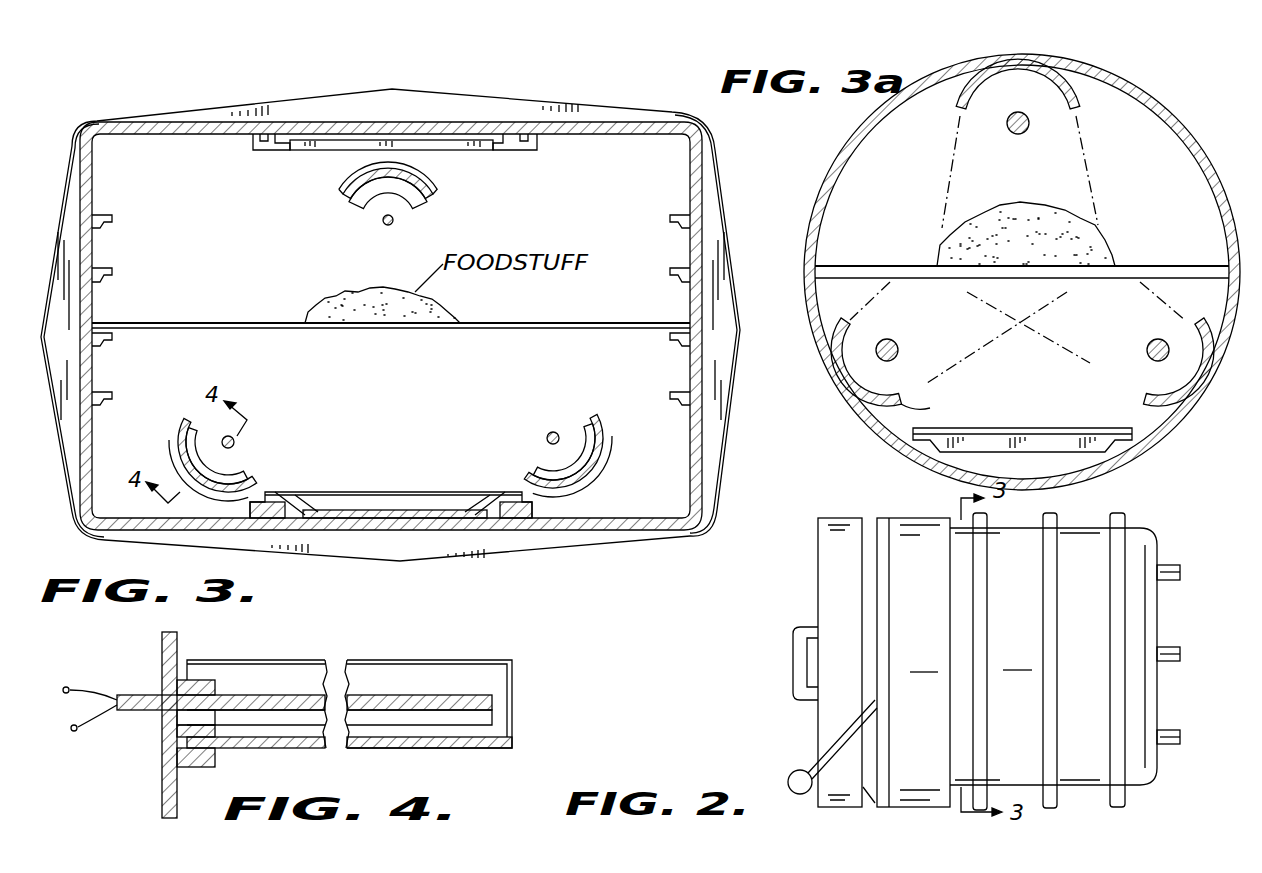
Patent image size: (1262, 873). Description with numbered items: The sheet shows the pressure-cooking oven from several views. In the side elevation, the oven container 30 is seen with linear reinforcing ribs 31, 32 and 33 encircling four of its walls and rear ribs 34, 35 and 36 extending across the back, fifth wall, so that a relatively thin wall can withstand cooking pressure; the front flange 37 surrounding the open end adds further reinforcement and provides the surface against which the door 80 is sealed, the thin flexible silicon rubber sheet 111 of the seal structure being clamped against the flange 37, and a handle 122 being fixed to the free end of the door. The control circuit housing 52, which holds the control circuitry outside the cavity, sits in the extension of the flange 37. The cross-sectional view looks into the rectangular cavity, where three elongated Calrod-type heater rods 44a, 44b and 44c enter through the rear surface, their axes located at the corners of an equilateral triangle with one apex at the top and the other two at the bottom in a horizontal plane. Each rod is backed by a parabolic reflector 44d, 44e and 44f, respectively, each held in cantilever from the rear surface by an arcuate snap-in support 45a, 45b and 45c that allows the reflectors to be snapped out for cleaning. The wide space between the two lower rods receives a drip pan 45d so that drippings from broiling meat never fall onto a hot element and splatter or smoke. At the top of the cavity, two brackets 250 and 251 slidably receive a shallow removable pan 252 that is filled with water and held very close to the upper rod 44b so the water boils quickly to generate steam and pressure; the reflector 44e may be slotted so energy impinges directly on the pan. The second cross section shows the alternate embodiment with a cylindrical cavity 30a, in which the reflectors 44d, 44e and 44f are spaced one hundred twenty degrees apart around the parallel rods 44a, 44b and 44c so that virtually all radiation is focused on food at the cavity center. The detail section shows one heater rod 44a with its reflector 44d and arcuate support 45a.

In FIG. 3, the oven container 30 is at (583, 552).
In FIG. 2, the oven container 30 is at (1053, 656).
In FIG. 3A, the cylindrical cavity 30a is at (1183, 128).
In FIG. 3, the reinforcing rib 31 is at (482, 98).
In FIG. 2, the reinforcing rib 31 is at (988, 520).
In FIG. 2, the reinforcing rib 32 is at (1051, 513).
In FIG. 2, the reinforcing rib 33 is at (1119, 513).
In FIG. 2, the rear rib 34 is at (1186, 571).
In FIG. 2, the rear rib 35 is at (1186, 653).
In FIG. 2, the rear rib 36 is at (1186, 736).
In FIG. 2, the front flange 37 is at (884, 520).
In FIG. 2, the control circuit housing 52 is at (924, 660).
In FIG. 2, the door 80 is at (830, 553).
In FIG. 2, the silicon rubber sheet 111 is at (863, 542).
In FIG. 2, the handle 122 is at (793, 656).
In FIG. 3, the bracket 250 is at (262, 152).
In FIG. 3, the bracket 251 is at (525, 152).
In FIG. 3, the removable pan 252 is at (445, 151).
In FIG. 3, the heater rod 44a is at (240, 441).
In FIG. 3A, the heater rod 44a is at (898, 343).
In FIG. 4, the heater rod 44a is at (268, 694).
In FIG. 3, the heater rod 44b is at (385, 226).
In FIG. 3A, the heater rod 44b is at (1018, 135).
In FIG. 3, the heater rod 44c is at (557, 431).
In FIG. 3A, the heater rod 44c is at (1160, 340).
In FIG. 3, the parabolic reflector 44d is at (258, 478).
In FIG. 3A, the parabolic reflector 44d is at (926, 408).
In FIG. 4, the parabolic reflector 44d is at (455, 646).
In FIG. 3, the parabolic reflector 44e is at (430, 206).
In FIG. 3A, the parabolic reflector 44e is at (1075, 110).
In FIG. 3, the parabolic reflector 44f is at (528, 476).
In FIG. 3A, the parabolic reflector 44f is at (1150, 399).
In FIG. 3, the arcuate support 45a is at (183, 434).
In FIG. 4, the arcuate support 45a is at (245, 749).
In FIG. 3, the arcuate support 45b is at (339, 191).
In FIG. 3, the arcuate support 45c is at (606, 458).
In FIG. 3, the drip pan 45d is at (470, 492).
In FIG. 3A, the drip pan 45d is at (1042, 415).